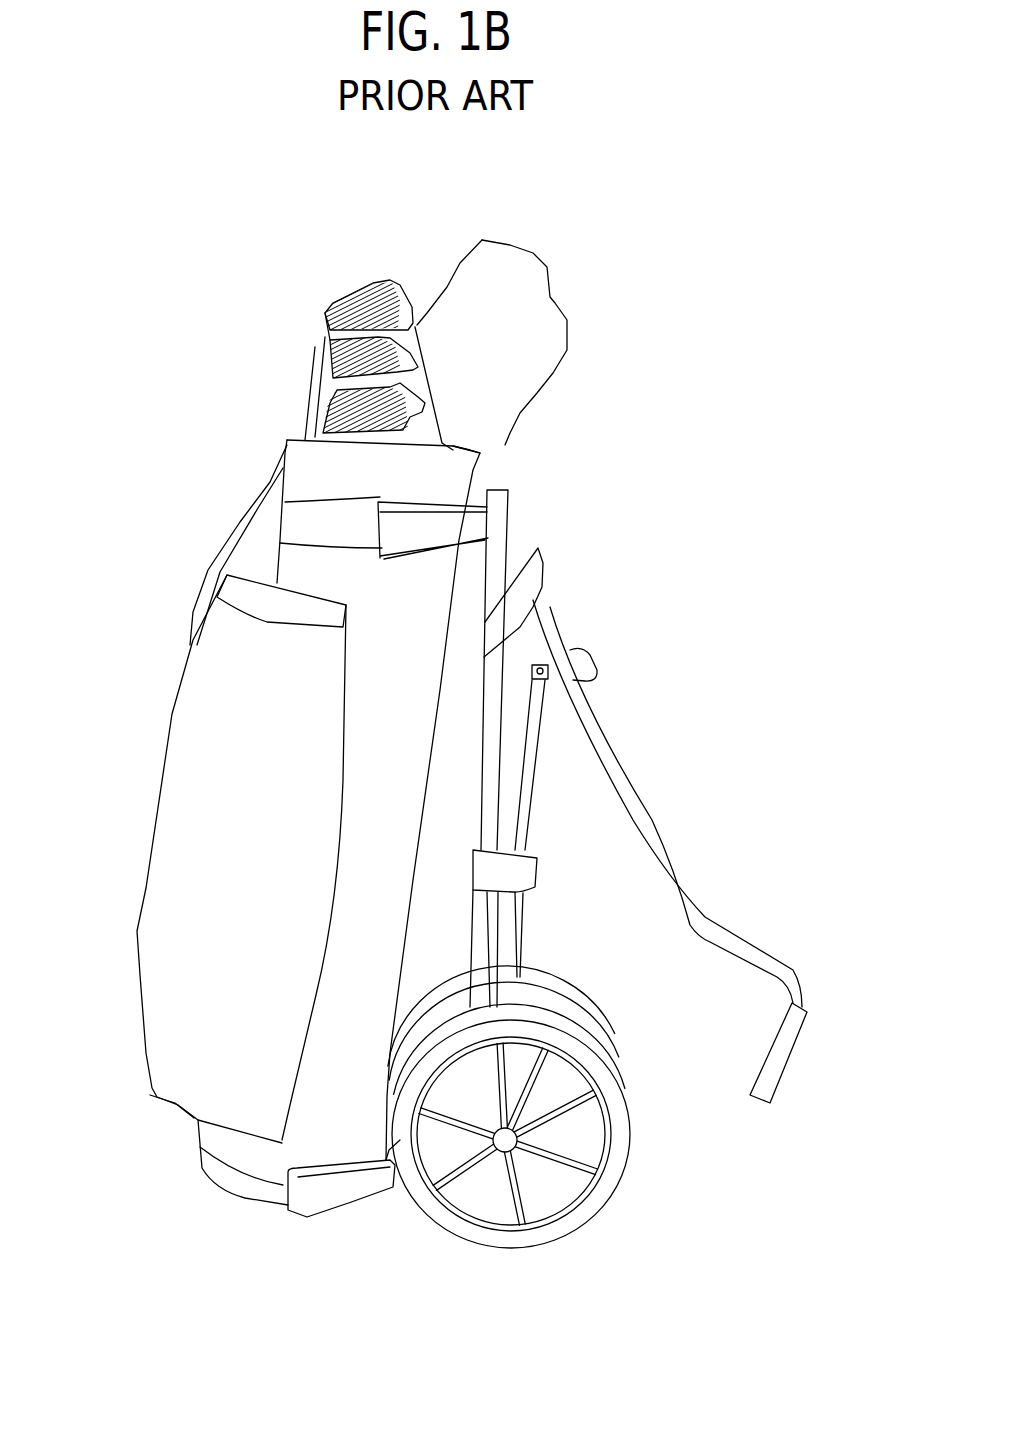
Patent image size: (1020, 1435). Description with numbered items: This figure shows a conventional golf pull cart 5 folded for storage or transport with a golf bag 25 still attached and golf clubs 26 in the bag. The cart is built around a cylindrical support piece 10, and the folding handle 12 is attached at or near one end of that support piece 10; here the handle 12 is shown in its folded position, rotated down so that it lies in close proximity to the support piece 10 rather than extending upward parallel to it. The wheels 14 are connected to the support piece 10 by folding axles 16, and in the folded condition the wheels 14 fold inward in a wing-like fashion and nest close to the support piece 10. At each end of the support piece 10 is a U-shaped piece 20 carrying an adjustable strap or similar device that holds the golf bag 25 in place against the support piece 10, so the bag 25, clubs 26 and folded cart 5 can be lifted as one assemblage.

The pull cart 5 is at (612, 462).
The support piece 10 is at (491, 677).
The folding handle 12 is at (610, 758).
The wheels 14 is at (594, 1202).
The folding axles 16 is at (513, 920).
The U-shaped piece 20 is at (433, 520).
The golf bag 25 is at (237, 535).
The golf clubs 26 is at (392, 251).